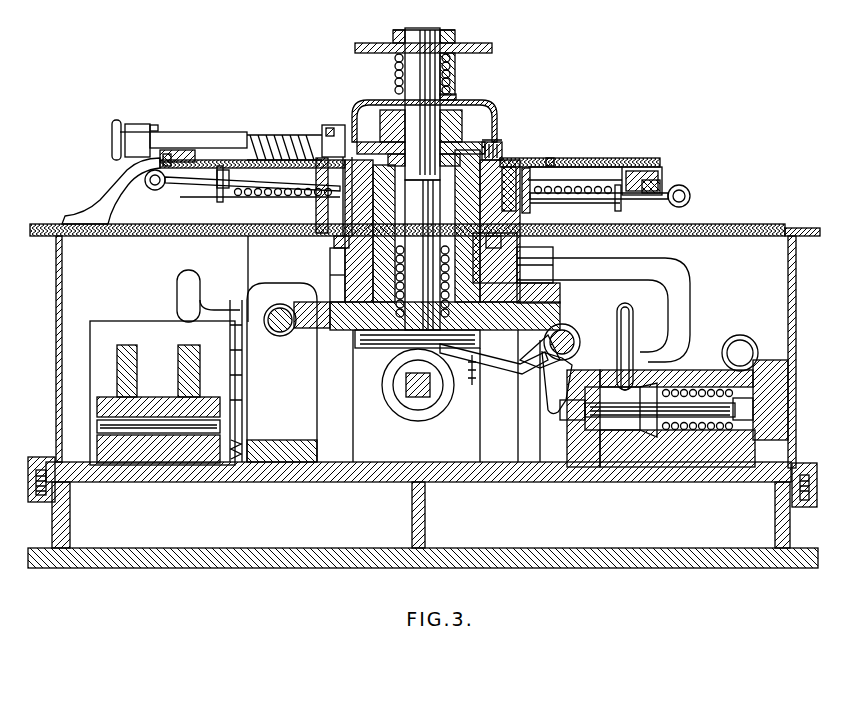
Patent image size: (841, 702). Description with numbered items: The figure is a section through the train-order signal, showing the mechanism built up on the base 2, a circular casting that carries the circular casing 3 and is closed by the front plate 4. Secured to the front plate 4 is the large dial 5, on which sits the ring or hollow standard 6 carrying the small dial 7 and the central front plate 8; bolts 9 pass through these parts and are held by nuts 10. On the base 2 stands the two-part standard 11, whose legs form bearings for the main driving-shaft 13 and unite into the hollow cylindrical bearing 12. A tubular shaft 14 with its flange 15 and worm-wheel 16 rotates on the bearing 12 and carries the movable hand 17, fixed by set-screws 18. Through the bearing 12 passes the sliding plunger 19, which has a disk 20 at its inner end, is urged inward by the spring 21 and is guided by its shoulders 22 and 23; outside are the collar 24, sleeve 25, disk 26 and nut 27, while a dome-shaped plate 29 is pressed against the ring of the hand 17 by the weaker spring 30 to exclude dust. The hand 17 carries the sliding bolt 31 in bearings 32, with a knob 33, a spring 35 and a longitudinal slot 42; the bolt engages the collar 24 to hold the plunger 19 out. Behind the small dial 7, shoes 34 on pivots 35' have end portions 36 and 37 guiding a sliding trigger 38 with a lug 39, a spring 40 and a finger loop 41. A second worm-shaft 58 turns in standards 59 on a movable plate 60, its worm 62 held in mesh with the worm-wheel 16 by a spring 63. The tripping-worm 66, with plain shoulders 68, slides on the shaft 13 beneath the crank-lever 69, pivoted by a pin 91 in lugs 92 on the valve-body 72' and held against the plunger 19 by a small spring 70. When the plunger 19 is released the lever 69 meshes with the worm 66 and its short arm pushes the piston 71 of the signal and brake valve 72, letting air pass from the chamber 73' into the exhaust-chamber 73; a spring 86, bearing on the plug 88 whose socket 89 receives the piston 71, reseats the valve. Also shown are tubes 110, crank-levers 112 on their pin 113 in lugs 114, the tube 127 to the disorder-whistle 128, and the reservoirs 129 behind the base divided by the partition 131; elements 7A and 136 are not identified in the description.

The base 2 is at (621, 475).
The circular casing 3 is at (797, 360).
The front plate 4 is at (803, 232).
The large dial 5 is at (748, 230).
The ring or hollow standard 6 is at (511, 206).
The small dial 7 is at (600, 168).
The pin 7A is at (634, 350).
The central front plate 8 is at (556, 160).
The bolts 9 is at (507, 165).
The nuts 10 is at (360, 262).
The two-part standard 11 is at (480, 437).
The hollow cylindrical bearing or post 12 is at (445, 226).
The main driving-shaft 13 is at (400, 401).
The tubular shaft 14 is at (522, 264).
The flange 15 is at (526, 302).
The worm-wheel 16 is at (548, 330).
The movable hand or pointer 17 is at (143, 140).
The set-screws 18 is at (503, 150).
The sliding plunger 19 is at (406, 72).
The disk 20 is at (400, 350).
The spring 21 is at (422, 281).
The shoulder 22 is at (418, 222).
The shoulder 23 is at (422, 104).
The collar 24 is at (385, 120).
The sleeve 25 is at (450, 90).
The disk 26 is at (486, 48).
The nut 27 is at (448, 36).
The dome-shaped plate 29 is at (497, 112).
The spring 30 is at (458, 98).
The sliding latch or bolt 31 is at (190, 133).
The bearings 32 is at (158, 127).
The knob or button 33 is at (118, 122).
The shoes 34 is at (387, 182).
The spring 35 is at (284, 135).
The pivot 35' is at (439, 118).
The end portion 36 is at (322, 218).
The end portion 37 is at (225, 198).
The sliding trigger 38 is at (195, 188).
The lug 39 is at (168, 190).
The spring 40 is at (400, 206).
The loop 41 is at (146, 180).
The longitudinal slot 42 is at (168, 160).
The second worm-shaft 58 is at (282, 336).
The bearings or standards 59 is at (282, 372).
The movable plate 60 is at (270, 442).
The worm 62 is at (270, 312).
The spring 63 is at (242, 440).
The tripping-worm 66 is at (418, 421).
The plain shoulder 68 is at (393, 384).
The crank-lever 69 is at (467, 378).
The small coiled spring 70 is at (520, 368).
The piston 71 is at (560, 416).
The signal and brake valve 72 is at (621, 455).
The valve-body 72' is at (558, 464).
The exhaust-chamber 73 is at (652, 466).
The chamber 73' is at (727, 463).
The spring 86 is at (682, 482).
The plug 88 is at (792, 410).
The socket 89 is at (758, 386).
The pin 91 is at (575, 332).
The lugs 92 is at (576, 355).
The tubes 110 is at (190, 280).
The crank-levers 112 is at (140, 373).
The pin 113 is at (100, 424).
The lugs 114 is at (98, 404).
The tube 127 is at (690, 318).
The disorder-whistle 128 is at (748, 342).
The reservoirs 129 is at (241, 515).
The partition 131 is at (412, 517).
The partition 136 is at (267, 279).